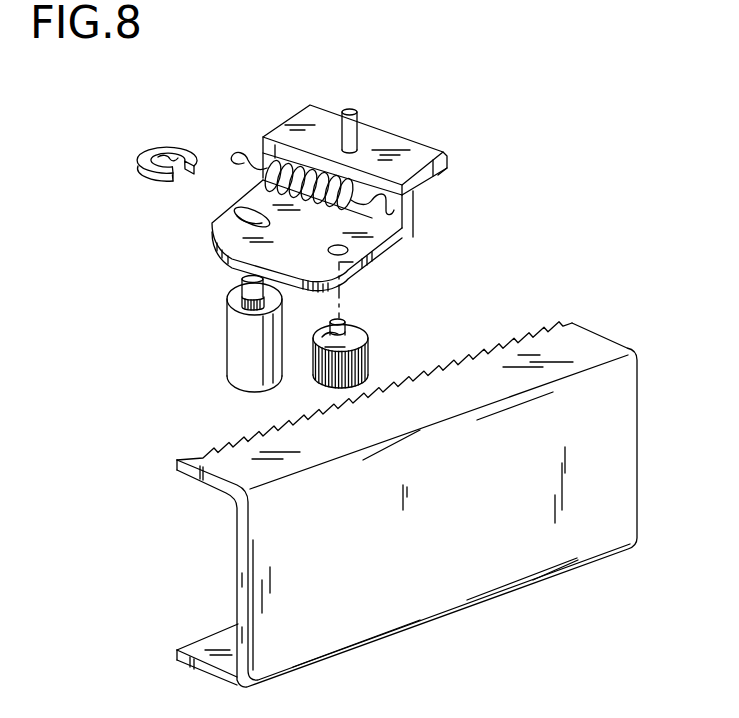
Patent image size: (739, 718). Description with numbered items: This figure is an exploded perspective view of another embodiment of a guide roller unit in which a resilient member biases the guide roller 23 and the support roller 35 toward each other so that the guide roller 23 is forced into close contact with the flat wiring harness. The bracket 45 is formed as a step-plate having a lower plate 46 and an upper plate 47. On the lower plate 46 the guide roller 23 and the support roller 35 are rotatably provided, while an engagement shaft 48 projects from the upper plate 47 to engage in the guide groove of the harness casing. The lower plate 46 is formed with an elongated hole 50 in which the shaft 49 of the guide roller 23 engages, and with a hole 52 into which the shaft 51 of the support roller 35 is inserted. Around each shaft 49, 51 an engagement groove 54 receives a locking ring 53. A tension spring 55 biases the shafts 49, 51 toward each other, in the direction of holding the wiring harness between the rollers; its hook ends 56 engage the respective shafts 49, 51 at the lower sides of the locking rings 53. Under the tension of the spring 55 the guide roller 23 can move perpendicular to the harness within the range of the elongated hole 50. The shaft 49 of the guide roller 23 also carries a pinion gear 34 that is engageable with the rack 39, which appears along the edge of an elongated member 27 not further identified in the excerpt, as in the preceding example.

The guide roller 23 is at (227, 370).
The channel member 27 is at (545, 580).
The pinion gear 34 is at (228, 297).
The support roller 35 is at (369, 361).
The rack 39 is at (208, 455).
The bracket 45 is at (430, 142).
The lower plate 46 is at (350, 267).
The upper plate 47 is at (393, 146).
The engagement shaft 48 is at (351, 108).
The shaft 49 is at (242, 280).
The elongated hole 50 is at (240, 218).
The shaft 51 is at (346, 318).
The hole 52 is at (350, 250).
The locking ring 53 is at (155, 150).
The engagement groove 54 is at (325, 335).
The tension spring 55 is at (273, 133).
The hook ends 56 is at (238, 152).